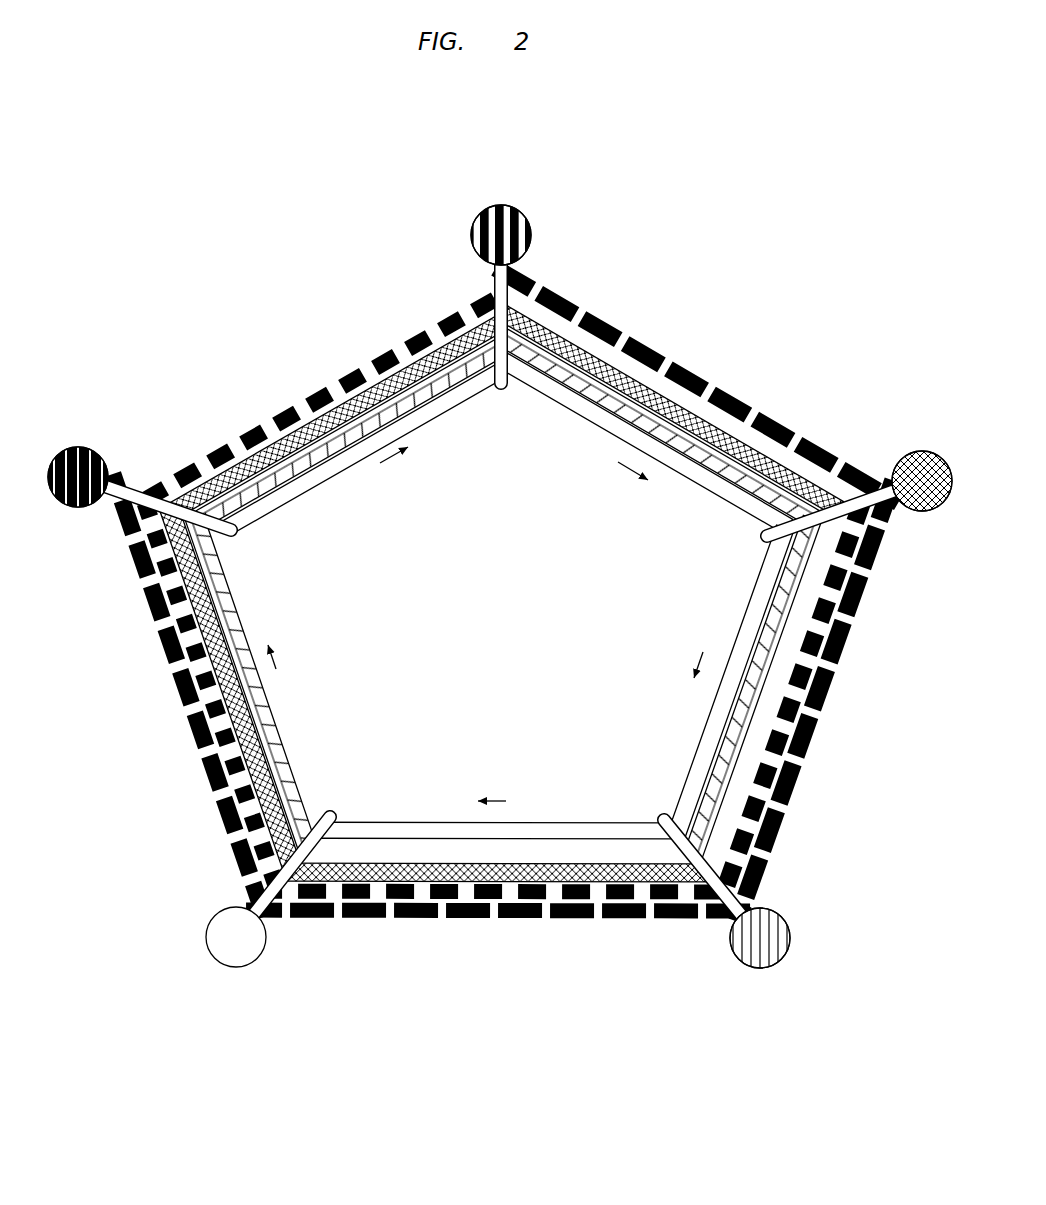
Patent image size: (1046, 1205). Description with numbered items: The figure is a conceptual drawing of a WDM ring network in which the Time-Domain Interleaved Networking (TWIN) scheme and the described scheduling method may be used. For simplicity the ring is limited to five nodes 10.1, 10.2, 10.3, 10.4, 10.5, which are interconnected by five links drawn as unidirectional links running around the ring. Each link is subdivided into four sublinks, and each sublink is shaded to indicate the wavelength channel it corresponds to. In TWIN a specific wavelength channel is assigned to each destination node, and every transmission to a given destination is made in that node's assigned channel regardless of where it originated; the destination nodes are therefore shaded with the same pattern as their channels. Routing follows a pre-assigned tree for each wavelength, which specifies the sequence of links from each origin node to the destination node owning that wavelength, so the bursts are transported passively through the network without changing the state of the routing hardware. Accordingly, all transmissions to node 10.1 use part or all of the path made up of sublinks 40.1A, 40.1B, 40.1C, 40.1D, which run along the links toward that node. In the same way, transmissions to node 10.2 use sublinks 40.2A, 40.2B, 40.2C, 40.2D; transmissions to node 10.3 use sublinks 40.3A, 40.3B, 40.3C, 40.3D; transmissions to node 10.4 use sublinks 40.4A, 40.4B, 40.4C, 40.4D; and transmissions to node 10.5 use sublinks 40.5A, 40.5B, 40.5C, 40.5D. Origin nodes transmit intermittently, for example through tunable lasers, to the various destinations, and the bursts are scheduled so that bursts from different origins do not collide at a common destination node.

The node 10.1 is at (503, 205).
The node 10.2 is at (923, 451).
The node 10.3 is at (760, 968).
The node 10.4 is at (236, 968).
The node 10.5 is at (79, 447).
The sublink 40.1A is at (845, 626).
The sublink 40.1B is at (478, 897).
The sublink 40.1C is at (215, 810).
The sublink 40.1D is at (280, 418).
The sublink 40.2A is at (393, 862).
The sublink 40.2B is at (222, 612).
The sublink 40.2C is at (390, 362).
The sublink 40.2D is at (712, 424).
The sublink 40.3A is at (282, 743).
The sublink 40.3B is at (343, 447).
The sublink 40.3C is at (618, 418).
The sublink 40.3D is at (770, 565).
The sublink 40.4A is at (454, 393).
The sublink 40.4B is at (755, 530).
The sublink 40.4C is at (695, 748).
The sublink 40.4D is at (640, 818).
The sublink 40.5A is at (600, 320).
The sublink 40.5B is at (793, 768).
The sublink 40.5C is at (640, 920).
The sublink 40.5D is at (165, 650).